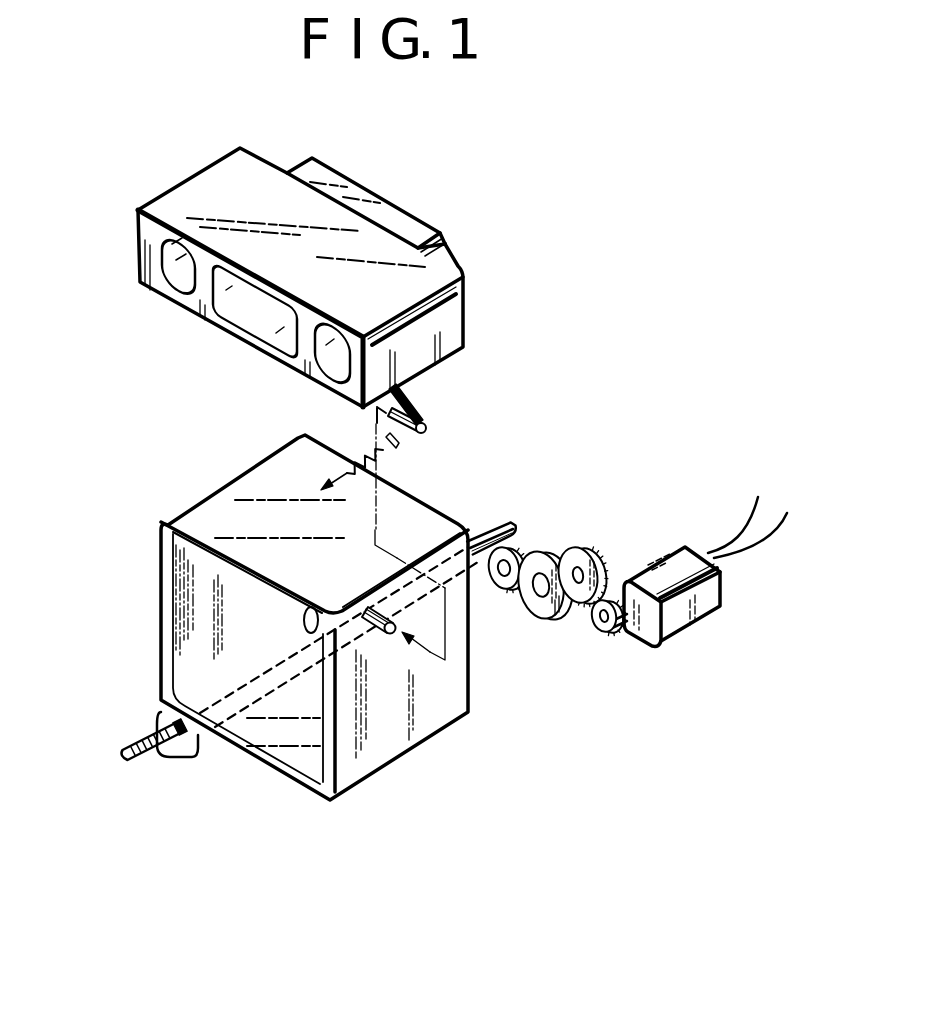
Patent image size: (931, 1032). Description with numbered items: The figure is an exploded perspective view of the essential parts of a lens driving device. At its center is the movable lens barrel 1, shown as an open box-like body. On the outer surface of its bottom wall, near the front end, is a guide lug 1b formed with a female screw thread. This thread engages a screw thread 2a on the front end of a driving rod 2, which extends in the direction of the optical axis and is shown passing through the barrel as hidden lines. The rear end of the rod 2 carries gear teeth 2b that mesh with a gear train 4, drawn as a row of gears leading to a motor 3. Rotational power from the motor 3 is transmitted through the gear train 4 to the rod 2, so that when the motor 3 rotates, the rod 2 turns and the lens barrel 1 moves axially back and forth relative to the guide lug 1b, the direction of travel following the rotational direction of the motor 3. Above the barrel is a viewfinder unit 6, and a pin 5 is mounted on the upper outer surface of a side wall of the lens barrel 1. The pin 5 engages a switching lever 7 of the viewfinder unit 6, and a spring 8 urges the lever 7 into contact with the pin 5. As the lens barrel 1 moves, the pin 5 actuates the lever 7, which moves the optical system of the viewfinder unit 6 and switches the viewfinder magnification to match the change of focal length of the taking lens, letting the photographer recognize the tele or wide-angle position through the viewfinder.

The movable lens barrel 1 is at (377, 773).
The guide lug 1b is at (188, 758).
The driving rod 2 is at (123, 764).
The screw thread 2a is at (147, 762).
The gear teeth 2b is at (503, 517).
The motor 3 is at (680, 642).
The gear train 4 is at (580, 628).
The pin 5 is at (428, 422).
The viewfinder unit 6 is at (457, 265).
The switching lever 7 is at (414, 398).
The spring 8 is at (352, 442).